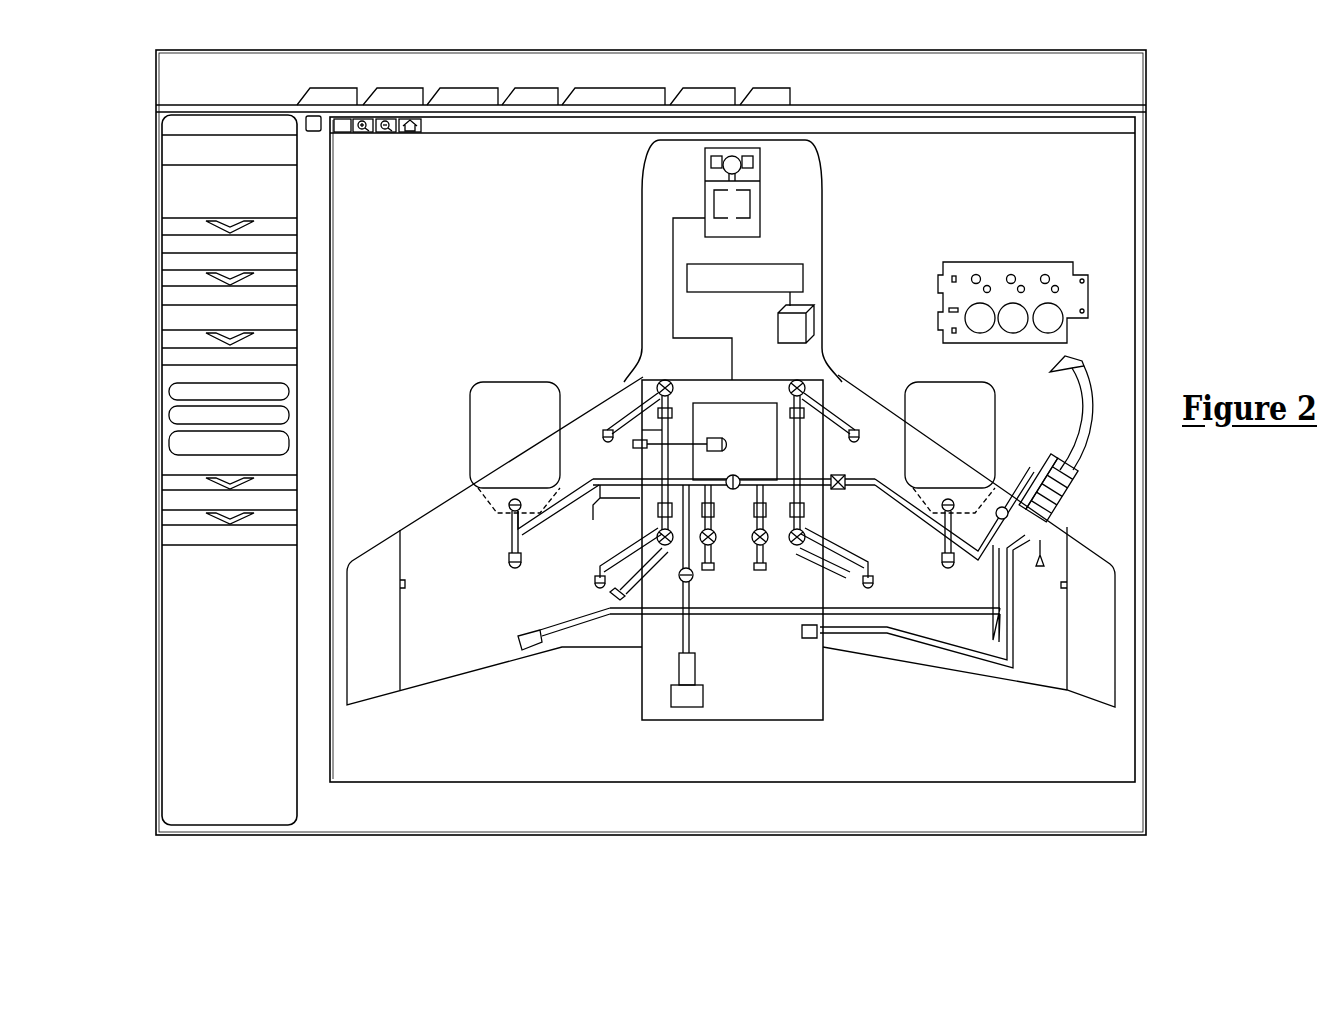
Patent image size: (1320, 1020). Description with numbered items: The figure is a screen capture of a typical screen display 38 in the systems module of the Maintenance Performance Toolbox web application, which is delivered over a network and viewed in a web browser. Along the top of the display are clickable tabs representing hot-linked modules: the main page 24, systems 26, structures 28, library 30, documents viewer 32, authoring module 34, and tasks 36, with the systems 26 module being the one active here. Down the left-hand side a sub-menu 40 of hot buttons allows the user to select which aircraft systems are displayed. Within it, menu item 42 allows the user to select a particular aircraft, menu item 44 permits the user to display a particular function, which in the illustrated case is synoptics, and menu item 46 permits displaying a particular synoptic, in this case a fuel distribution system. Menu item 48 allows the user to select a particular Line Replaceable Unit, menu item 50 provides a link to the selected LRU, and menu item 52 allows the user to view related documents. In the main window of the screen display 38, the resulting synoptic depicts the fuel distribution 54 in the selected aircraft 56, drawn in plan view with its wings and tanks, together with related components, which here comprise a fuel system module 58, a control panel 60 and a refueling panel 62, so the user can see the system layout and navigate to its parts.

The main page tab 24 is at (330, 88).
The systems tab 26 is at (415, 88).
The structures tab 28 is at (490, 88).
The library tab 30 is at (553, 88).
The documents viewer tab 32 is at (655, 88).
The authoring module tab 34 is at (728, 88).
The tasks tab 36 is at (783, 88).
The screen display 38 is at (1167, 63).
The sub-menu 40 is at (150, 115).
The aircraft selection menu item 42 is at (287, 193).
The function selection menu item 44 is at (290, 260).
The synoptic selection menu item 46 is at (290, 320).
The LRU selection menu item 48 is at (292, 447).
The LRU link menu item 50 is at (290, 500).
The view documents menu item 52 is at (290, 535).
The fuel distribution 54 is at (618, 388).
The selected aircraft 56 is at (657, 208).
The fuel system module 58 is at (752, 173).
The control panel 60 is at (795, 278).
The refueling panel 62 is at (1003, 262).